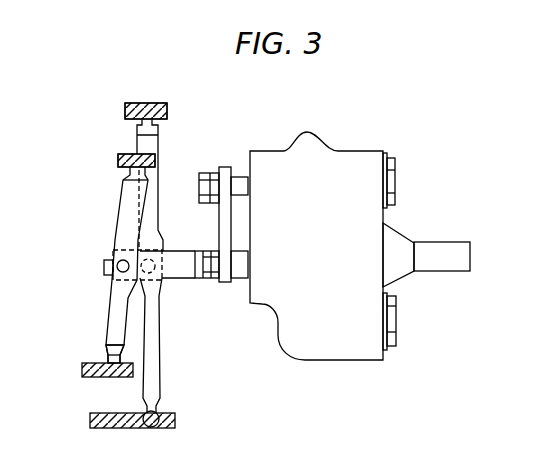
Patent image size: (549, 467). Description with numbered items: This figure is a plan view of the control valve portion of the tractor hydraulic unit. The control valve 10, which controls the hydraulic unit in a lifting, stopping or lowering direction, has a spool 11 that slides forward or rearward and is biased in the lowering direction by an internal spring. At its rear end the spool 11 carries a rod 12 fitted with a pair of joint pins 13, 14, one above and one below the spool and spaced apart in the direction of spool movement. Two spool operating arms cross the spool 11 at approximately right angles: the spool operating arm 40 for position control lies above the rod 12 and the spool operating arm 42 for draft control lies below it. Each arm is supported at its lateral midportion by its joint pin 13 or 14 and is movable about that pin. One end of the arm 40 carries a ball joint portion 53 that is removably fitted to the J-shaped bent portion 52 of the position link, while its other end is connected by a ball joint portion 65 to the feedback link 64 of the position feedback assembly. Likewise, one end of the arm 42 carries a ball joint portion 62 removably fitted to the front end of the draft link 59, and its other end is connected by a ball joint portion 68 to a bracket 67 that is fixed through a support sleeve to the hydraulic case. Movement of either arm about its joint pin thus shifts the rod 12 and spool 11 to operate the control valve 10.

The control valve 10 is at (338, 167).
The spool 11 is at (241, 270).
The rod 12 is at (185, 279).
The joint pin 13 is at (117, 268).
The joint pin 14 is at (161, 238).
The spool operating arm for position control 40 is at (122, 238).
The spool operating arm for draft control 42 is at (150, 359).
The bent portion 52 is at (84, 372).
The ball joint portion 53 is at (101, 366).
The draft link 59 is at (105, 428).
The ball joint portion 62 is at (157, 428).
The feedback link 64 is at (118, 161).
The ball joint portion 65 is at (156, 160).
The bracket 67 is at (166, 112).
The ball joint portion 68 is at (151, 103).